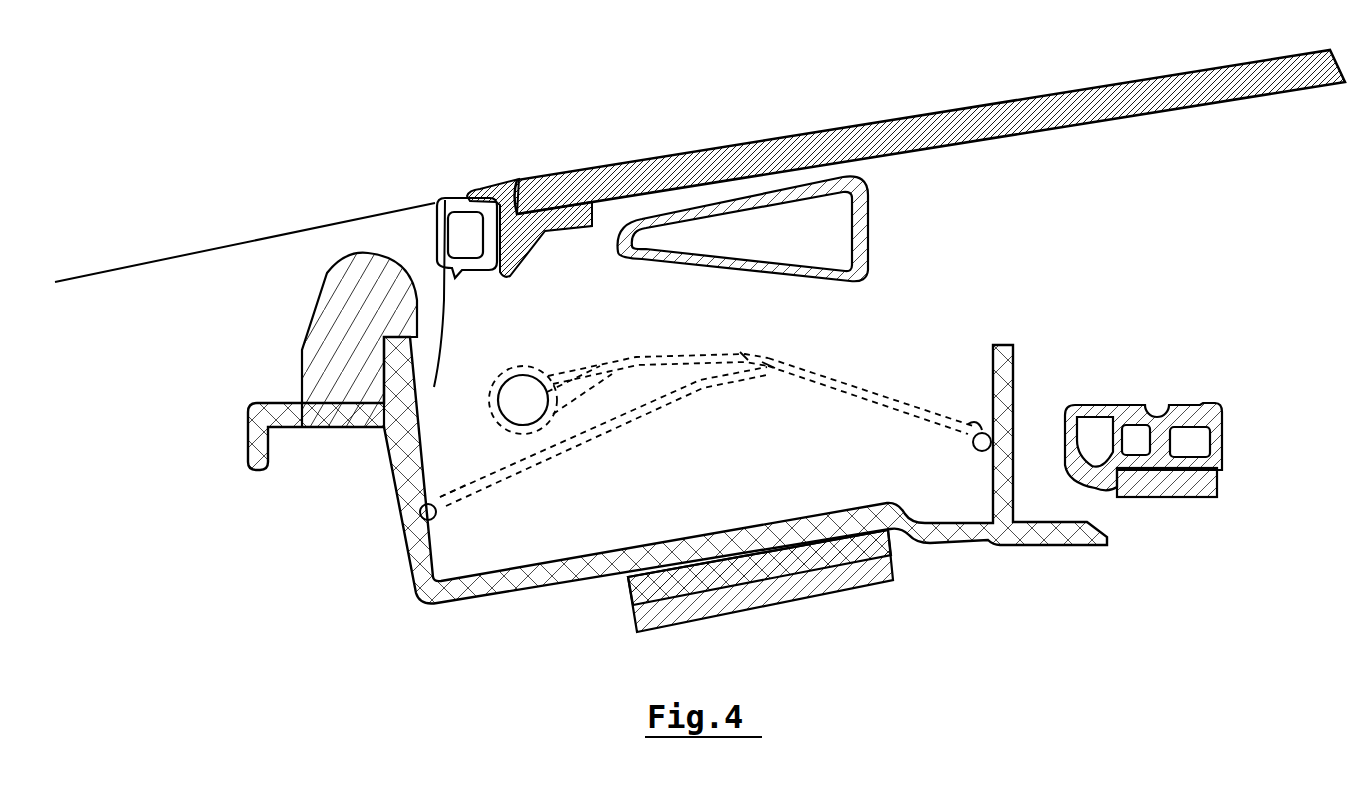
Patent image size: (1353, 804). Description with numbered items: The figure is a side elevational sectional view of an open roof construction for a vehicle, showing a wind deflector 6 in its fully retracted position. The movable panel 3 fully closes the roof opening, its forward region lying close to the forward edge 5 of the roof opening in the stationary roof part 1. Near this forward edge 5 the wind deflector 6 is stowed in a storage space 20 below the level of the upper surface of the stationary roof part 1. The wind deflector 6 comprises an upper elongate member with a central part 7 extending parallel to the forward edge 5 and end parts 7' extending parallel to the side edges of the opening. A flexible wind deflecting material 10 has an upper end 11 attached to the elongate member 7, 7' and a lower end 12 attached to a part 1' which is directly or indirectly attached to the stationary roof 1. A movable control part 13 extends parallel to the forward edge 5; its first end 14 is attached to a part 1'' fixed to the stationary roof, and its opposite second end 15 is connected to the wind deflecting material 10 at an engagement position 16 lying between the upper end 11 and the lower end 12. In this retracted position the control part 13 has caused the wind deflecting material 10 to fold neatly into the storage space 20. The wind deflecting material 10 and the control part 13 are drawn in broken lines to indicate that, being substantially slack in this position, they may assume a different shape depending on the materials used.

The stationary roof part 1 is at (581, 385).
The part attached to the stationary roof 1' is at (454, 527).
The part attached to the stationary roof 1'' is at (966, 464).
The movable panel 3 is at (986, 139).
The forward edge of the roof opening 5 is at (450, 322).
The wind deflector 6 is at (648, 356).
The central part of the elongate member 7 is at (529, 367).
The end parts of the elongate member 7' is at (523, 400).
The flexible wind deflecting material 10 is at (627, 370).
The upper end of the wind deflecting material 11 is at (565, 370).
The lower end of the wind deflecting material 12 is at (448, 487).
The movable control part 13 is at (858, 388).
The first end of the control part 14 is at (972, 420).
The second end of the control part 15 is at (772, 370).
The engagement position 16 is at (740, 358).
The storage space 20 is at (739, 456).